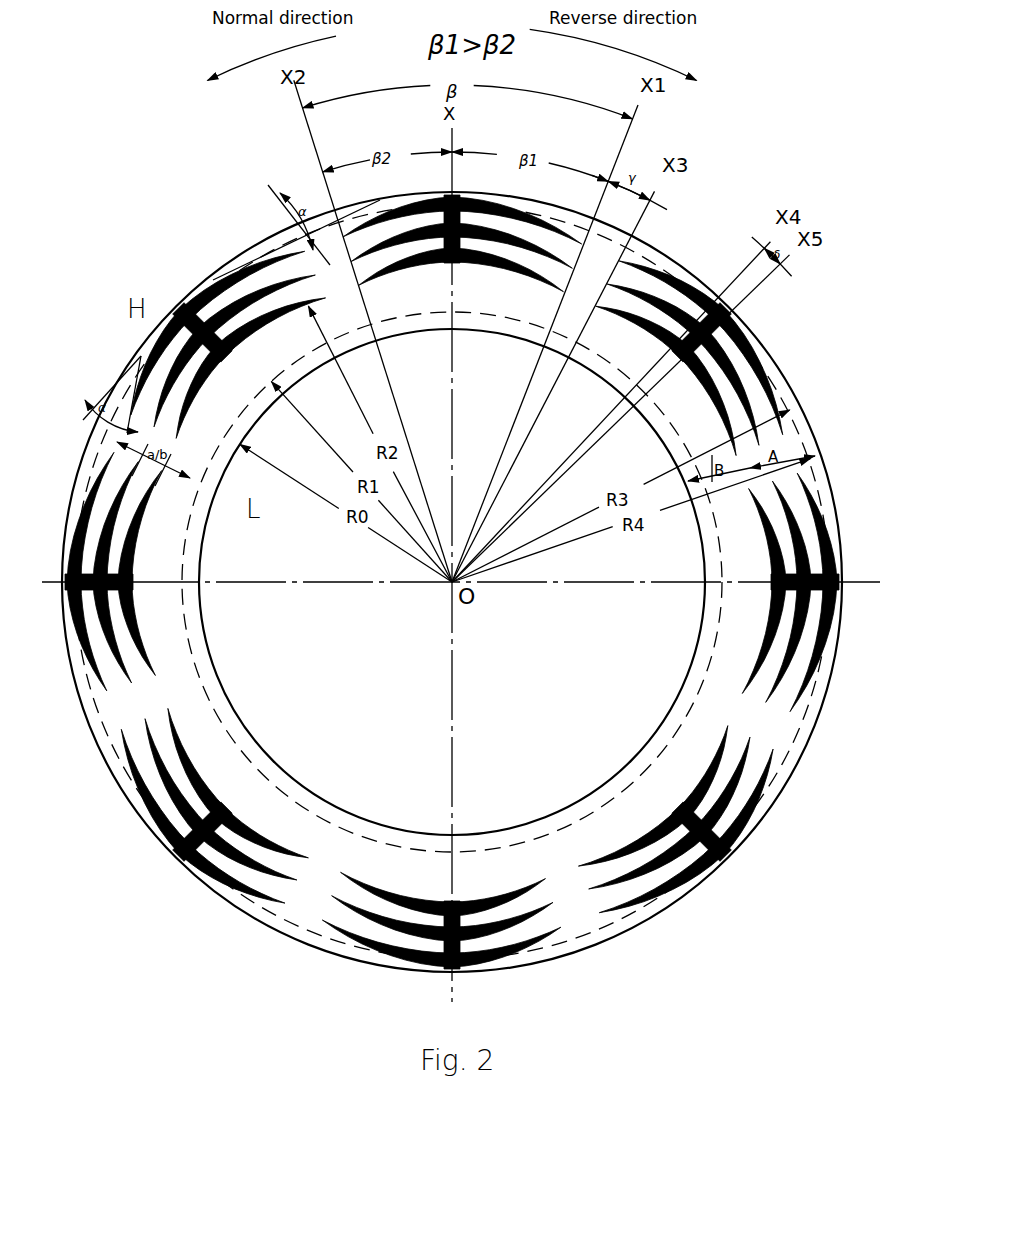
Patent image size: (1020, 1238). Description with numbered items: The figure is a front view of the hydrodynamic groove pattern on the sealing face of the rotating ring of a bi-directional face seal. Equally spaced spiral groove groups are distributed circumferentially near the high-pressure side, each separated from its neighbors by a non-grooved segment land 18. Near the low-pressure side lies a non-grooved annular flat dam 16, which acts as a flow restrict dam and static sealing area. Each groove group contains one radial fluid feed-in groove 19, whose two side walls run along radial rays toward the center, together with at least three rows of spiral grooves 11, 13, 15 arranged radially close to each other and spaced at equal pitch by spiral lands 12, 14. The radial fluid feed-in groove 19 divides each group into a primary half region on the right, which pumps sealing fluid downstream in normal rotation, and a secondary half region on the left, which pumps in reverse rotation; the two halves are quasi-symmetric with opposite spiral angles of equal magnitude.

The spiral groove 11 is at (840, 578).
The spiral land 12 is at (840, 570).
The spiral groove 13 is at (840, 563).
The spiral land 14 is at (818, 557).
The spiral groove 15 is at (783, 532).
The annular flat dam 16 is at (737, 507).
The segment land 18 is at (772, 732).
The radial fluid feed-in groove 19 is at (842, 585).